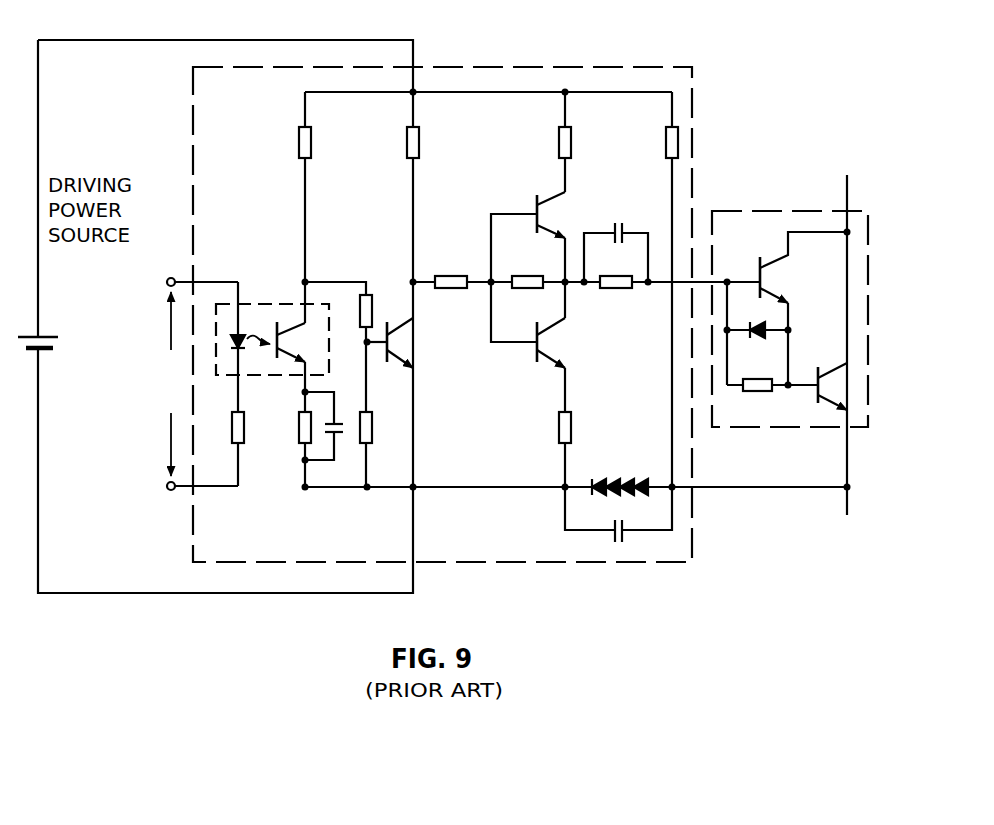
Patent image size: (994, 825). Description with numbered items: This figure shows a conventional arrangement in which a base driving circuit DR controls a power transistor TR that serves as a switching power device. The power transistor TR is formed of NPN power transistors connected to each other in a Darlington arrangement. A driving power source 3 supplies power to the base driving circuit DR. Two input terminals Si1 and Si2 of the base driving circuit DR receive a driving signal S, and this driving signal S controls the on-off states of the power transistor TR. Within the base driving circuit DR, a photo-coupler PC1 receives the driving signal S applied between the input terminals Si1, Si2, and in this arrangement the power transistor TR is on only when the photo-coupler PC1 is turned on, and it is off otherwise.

The driving power source 3 is at (50, 334).
The base driving circuit DR is at (513, 67).
The power transistor TR is at (787, 210).
The photo-coupler PC1 is at (278, 303).
The input terminal Si1 is at (185, 282).
The input terminal Si2 is at (183, 486).
The driving signal S is at (125, 384).